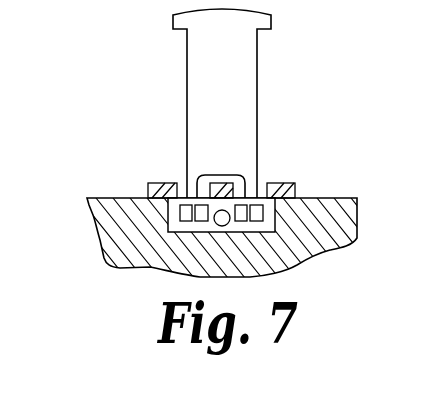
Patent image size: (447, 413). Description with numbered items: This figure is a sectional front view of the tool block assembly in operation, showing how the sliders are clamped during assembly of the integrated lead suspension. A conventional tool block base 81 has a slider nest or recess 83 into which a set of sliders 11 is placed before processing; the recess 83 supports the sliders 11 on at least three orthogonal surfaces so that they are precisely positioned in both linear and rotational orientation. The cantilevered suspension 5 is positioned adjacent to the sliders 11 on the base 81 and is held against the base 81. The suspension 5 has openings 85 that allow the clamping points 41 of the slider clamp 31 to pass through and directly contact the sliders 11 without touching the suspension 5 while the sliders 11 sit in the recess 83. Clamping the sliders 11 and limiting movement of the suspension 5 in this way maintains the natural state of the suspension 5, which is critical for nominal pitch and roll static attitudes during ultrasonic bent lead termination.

The tool block base 81 is at (332, 212).
The slider nest or recess 83 is at (180, 219).
The sliders 11 is at (190, 222).
The openings 85 is at (176, 194).
The cantilevered suspension 5 is at (272, 182).
The clamping points 41 is at (252, 188).
The slider clamp 31 is at (243, 62).